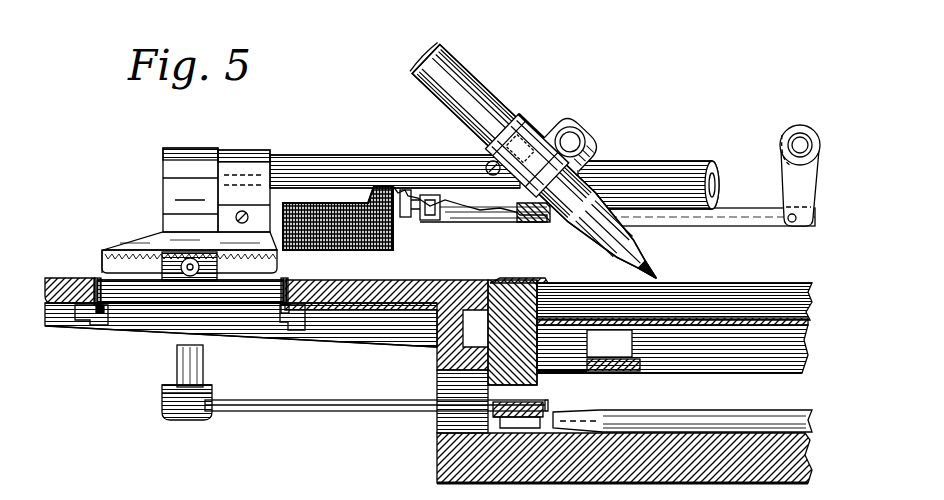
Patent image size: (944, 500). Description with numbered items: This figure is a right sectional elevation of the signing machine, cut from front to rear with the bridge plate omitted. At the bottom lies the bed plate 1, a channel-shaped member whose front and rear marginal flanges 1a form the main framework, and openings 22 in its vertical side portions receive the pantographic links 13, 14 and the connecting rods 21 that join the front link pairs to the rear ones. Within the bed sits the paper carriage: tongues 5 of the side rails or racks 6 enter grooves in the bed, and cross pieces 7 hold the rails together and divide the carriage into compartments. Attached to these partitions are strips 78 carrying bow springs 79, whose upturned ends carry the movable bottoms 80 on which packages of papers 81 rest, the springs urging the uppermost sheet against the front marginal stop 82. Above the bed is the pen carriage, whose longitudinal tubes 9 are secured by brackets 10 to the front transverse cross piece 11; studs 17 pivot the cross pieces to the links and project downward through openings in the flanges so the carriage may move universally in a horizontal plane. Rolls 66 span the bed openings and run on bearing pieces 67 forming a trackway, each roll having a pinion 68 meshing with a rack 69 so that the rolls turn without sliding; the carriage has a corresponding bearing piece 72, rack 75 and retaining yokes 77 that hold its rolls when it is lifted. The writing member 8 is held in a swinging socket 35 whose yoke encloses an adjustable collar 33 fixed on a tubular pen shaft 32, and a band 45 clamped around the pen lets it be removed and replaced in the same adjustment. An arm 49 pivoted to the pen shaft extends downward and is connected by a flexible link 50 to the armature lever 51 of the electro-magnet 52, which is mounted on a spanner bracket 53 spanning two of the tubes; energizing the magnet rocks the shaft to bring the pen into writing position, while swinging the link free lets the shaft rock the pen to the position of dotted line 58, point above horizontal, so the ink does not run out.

The bed plate 1 is at (652, 468).
The marginal flanges 1a is at (372, 308).
The tongues 5 is at (411, 332).
The racks 6 is at (533, 368).
The cross pieces 7 is at (705, 372).
The writing members 8 is at (452, 76).
The longitudinal tubes 9 is at (395, 172).
The brackets 10 is at (190, 190).
The front transverse cross piece 11 is at (178, 204).
The pantographic links 13 is at (320, 410).
The pantographic links 14 is at (390, 410).
The studs 17 is at (180, 362).
The connecting rods 21 is at (755, 418).
The openings 22 is at (437, 426).
The tubular pen shafts 32 is at (795, 125).
The adjustable collars 33 is at (598, 148).
The swinging sockets 35 is at (545, 205).
The band 45 is at (518, 120).
The arm 49 is at (800, 175).
The link 50 is at (757, 226).
The armature lever 51 is at (408, 217).
The electro-magnet 52 is at (370, 250).
The spanner bracket 53 is at (245, 152).
The dotted line 58 is at (645, 168).
The rolls 66 is at (140, 302).
The bearing pieces 67 is at (76, 318).
The pinion 68 is at (95, 277).
The racks 69 is at (99, 314).
The bearing piece 72 is at (150, 240).
The rack 75 is at (120, 253).
The retaining yokes 77 is at (103, 248).
The strips 78 is at (625, 372).
The bow springs 79 is at (609, 343).
The movable bottoms 80 is at (740, 286).
The papers 81 is at (772, 298).
The front marginal stop 82 is at (486, 282).